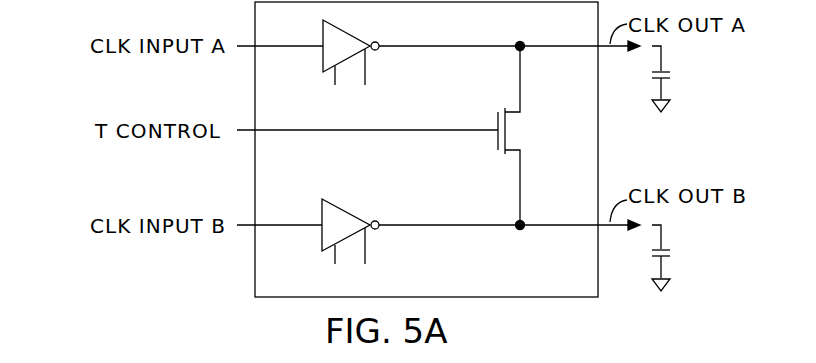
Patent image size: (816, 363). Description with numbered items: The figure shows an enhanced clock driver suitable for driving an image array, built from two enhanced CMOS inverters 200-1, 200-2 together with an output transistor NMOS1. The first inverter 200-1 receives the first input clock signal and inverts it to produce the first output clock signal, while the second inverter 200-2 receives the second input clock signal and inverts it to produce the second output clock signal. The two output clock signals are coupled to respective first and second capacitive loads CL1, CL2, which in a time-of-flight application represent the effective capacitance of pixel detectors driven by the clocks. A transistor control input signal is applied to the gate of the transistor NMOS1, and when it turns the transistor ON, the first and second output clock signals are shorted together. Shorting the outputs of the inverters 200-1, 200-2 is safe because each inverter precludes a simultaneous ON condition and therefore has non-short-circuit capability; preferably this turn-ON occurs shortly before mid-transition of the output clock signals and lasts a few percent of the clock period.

The enhanced CMOS inverter 200-1 is at (345, 33).
The enhanced CMOS inverter 200-2 is at (335, 205).
The output transistor NMOS1 is at (467, 135).
The first capacitive load CL1 is at (683, 79).
The second capacitive load CL2 is at (683, 258).